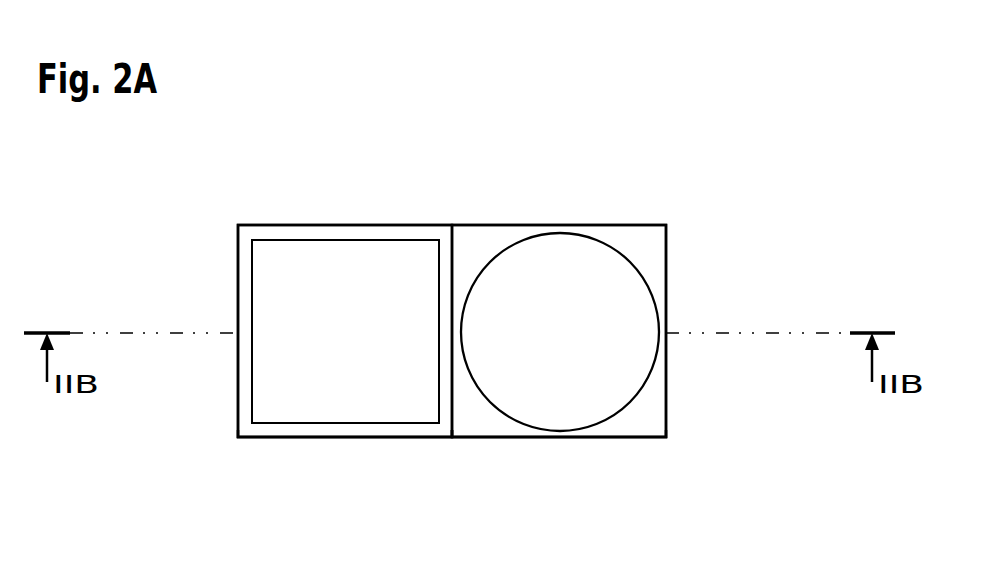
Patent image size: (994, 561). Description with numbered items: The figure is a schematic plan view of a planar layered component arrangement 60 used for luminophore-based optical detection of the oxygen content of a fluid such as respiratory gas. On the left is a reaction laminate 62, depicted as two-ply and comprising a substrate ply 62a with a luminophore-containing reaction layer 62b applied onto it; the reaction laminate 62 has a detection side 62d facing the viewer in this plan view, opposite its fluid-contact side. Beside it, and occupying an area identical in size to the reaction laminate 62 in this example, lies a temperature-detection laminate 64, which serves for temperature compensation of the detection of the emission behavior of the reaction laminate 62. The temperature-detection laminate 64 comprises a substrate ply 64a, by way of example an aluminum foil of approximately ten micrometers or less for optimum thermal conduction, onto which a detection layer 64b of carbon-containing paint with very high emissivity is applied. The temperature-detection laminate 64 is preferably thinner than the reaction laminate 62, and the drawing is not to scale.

The layered component arrangement 60 is at (434, 117).
The reaction laminate 62 is at (263, 213).
The substrate ply 62a is at (279, 430).
The luminophore-containing reaction layer 62b is at (368, 347).
The detection side 62d is at (336, 258).
The temperature-detection laminate 64 is at (576, 213).
The substrate ply 64a is at (642, 413).
The detection layer 64b is at (585, 347).